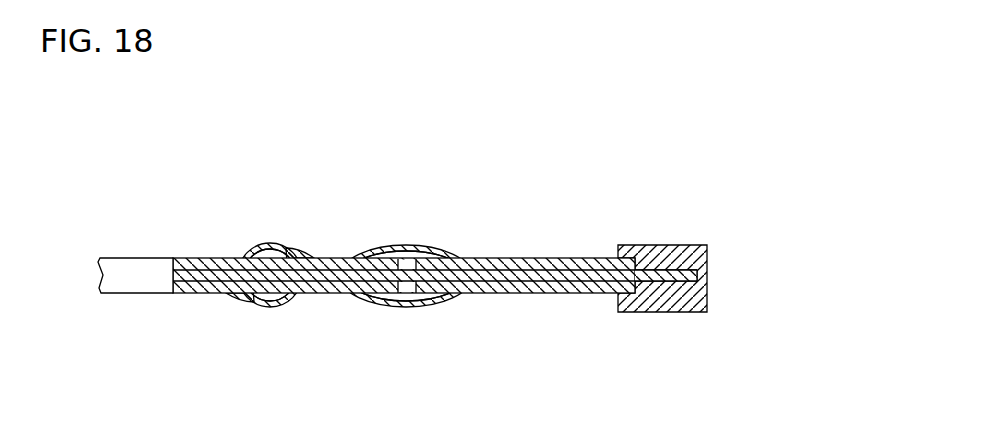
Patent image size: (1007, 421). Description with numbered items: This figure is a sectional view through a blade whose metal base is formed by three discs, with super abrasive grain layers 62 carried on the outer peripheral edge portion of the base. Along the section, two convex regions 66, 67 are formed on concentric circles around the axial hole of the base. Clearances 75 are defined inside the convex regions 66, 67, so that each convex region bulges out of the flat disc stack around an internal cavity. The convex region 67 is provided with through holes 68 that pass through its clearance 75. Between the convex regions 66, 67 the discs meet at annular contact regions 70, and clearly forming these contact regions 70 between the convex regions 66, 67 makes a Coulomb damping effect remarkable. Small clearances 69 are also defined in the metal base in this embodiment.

The super abrasive grain layer 62 is at (654, 246).
The convex region 66 is at (273, 246).
The convex region 67 is at (428, 247).
The through hole 68 is at (402, 309).
The small clearance 69 is at (215, 266).
The annular contact region 70 is at (340, 262).
The clearance 75 is at (270, 292).